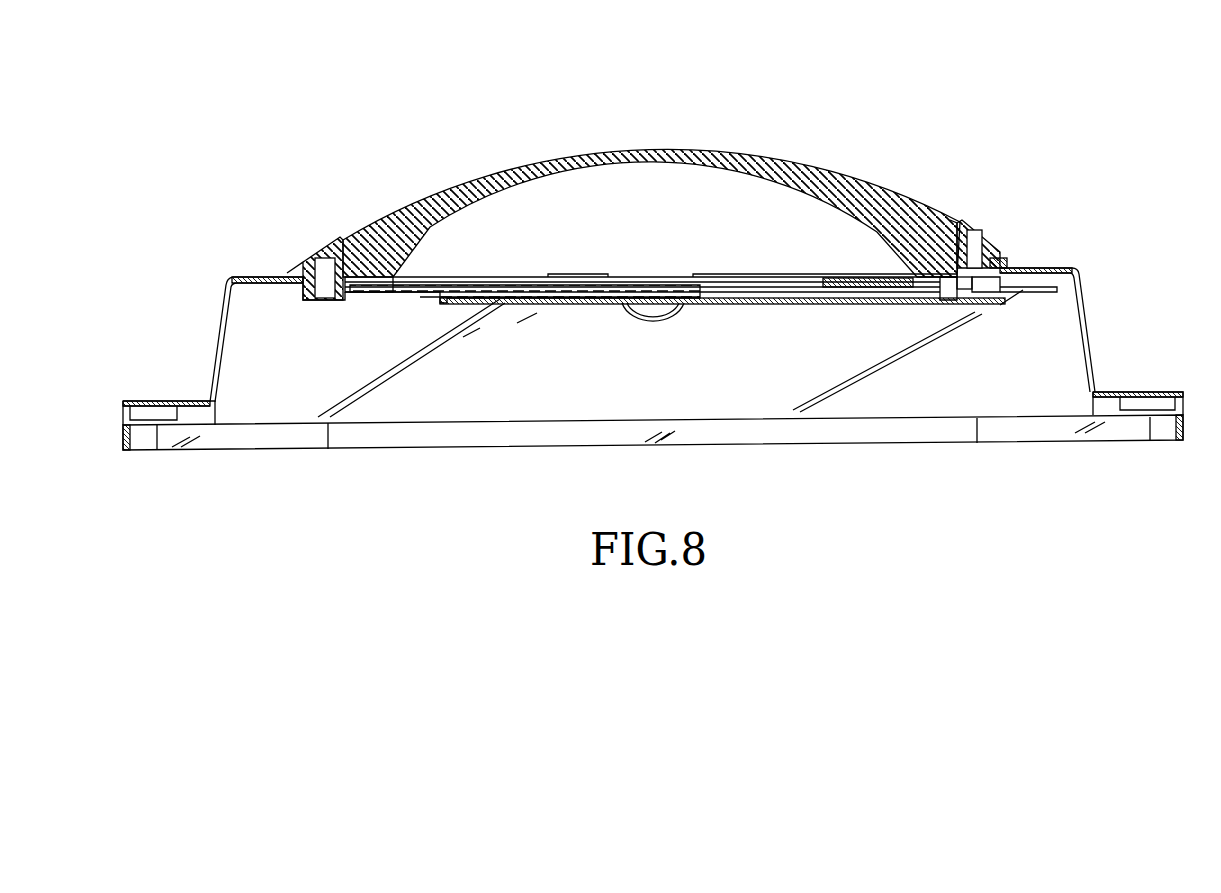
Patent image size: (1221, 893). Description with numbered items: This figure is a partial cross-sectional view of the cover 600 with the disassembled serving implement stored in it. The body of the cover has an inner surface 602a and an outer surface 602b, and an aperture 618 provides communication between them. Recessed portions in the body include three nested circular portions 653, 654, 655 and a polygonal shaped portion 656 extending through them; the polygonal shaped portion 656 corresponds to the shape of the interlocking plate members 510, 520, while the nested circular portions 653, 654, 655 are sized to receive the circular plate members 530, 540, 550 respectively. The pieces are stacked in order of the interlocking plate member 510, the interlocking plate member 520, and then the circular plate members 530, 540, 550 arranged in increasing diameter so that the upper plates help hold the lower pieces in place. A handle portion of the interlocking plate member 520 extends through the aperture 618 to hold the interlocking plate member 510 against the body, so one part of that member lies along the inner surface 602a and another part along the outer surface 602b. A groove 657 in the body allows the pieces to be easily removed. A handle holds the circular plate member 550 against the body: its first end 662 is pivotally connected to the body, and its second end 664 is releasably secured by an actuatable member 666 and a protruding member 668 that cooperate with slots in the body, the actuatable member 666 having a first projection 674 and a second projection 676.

The cover 600 is at (697, 132).
The inner surface 602a is at (762, 306).
The outer surface 602b is at (1058, 270).
The interlocking plate member 510 is at (922, 298).
The interlocking plate member 520 is at (988, 293).
The circular plate member 530 is at (757, 288).
The circular plate member 540 is at (613, 283).
The circular plate member 550 is at (550, 280).
The aperture 618 is at (953, 300).
The nested circular portion 653 is at (440, 297).
The nested circular portion 654 is at (397, 290).
The nested circular portion 655 is at (367, 287).
The polygonal shaped portion 656 is at (822, 290).
The groove 657 is at (650, 323).
The first end 662 is at (297, 237).
The second end 664 is at (950, 218).
The actuatable member 666 is at (973, 235).
The protruding member 668 is at (990, 288).
The first projection 674 is at (1000, 258).
The second projection 676 is at (963, 289).